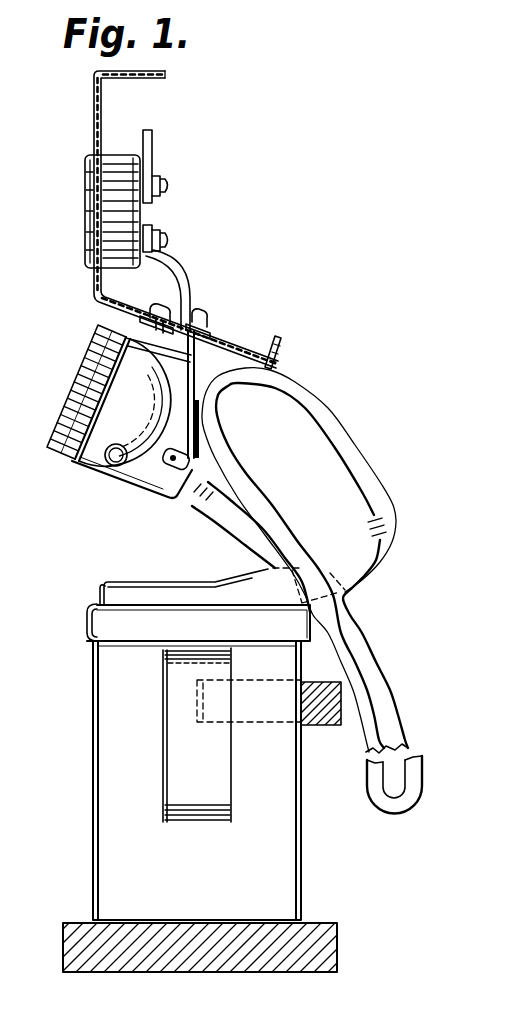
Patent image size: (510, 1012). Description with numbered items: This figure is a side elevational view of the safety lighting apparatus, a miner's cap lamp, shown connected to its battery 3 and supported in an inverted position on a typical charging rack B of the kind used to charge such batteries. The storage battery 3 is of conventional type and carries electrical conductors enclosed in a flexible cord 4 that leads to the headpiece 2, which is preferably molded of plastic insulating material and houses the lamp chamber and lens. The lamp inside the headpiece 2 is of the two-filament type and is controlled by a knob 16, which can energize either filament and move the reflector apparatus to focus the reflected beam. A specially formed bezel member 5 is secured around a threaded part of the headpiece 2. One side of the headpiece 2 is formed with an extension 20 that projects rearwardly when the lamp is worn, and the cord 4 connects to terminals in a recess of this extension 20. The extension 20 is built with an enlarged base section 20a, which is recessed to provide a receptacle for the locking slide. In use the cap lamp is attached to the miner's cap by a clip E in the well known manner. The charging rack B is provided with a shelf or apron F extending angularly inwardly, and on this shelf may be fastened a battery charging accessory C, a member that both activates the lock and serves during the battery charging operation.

The charging rack B is at (103, 122).
The battery charging accessory C is at (140, 323).
The shelf or apron F is at (223, 343).
The enlarged base section 20a is at (192, 361).
The bezel member 5 is at (52, 463).
The headpiece 2 is at (90, 465).
The knob 16 is at (117, 465).
The extension 20 is at (160, 485).
The clip E is at (197, 444).
The flexible cord 4 is at (364, 636).
The battery 3 is at (280, 825).